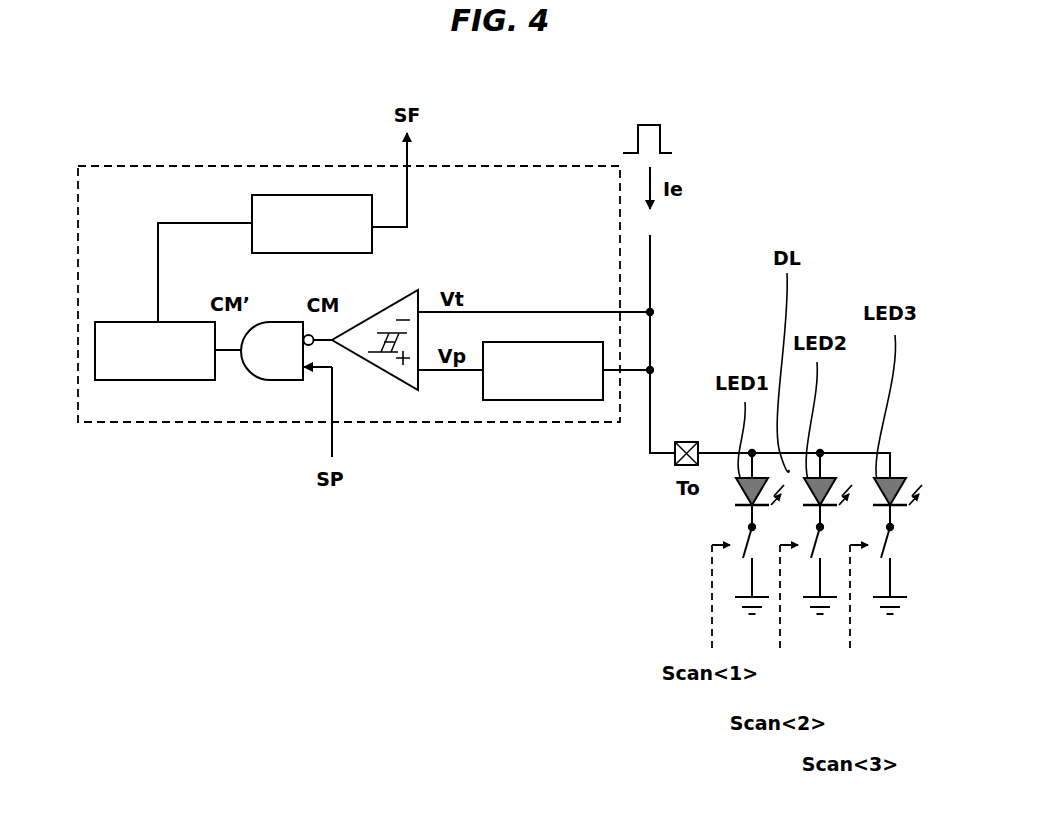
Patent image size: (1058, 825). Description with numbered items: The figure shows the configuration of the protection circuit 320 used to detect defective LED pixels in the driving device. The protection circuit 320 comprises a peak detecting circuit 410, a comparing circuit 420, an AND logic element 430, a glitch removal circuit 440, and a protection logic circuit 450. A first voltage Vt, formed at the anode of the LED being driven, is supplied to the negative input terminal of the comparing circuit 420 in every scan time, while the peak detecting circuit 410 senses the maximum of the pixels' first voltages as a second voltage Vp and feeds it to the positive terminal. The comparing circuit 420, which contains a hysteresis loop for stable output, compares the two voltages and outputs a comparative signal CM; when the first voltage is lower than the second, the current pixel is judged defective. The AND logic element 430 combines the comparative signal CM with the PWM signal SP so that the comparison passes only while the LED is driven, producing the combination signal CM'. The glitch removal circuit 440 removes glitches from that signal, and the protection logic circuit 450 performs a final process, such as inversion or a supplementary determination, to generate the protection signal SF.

The protection circuit 320 is at (349, 294).
The peak detecting circuit 410 is at (541, 400).
The comparing circuit 420 is at (402, 385).
The AND logic element 430 is at (255, 380).
The glitch removal circuit 440 is at (153, 380).
The protection logic circuit 450 is at (310, 195).